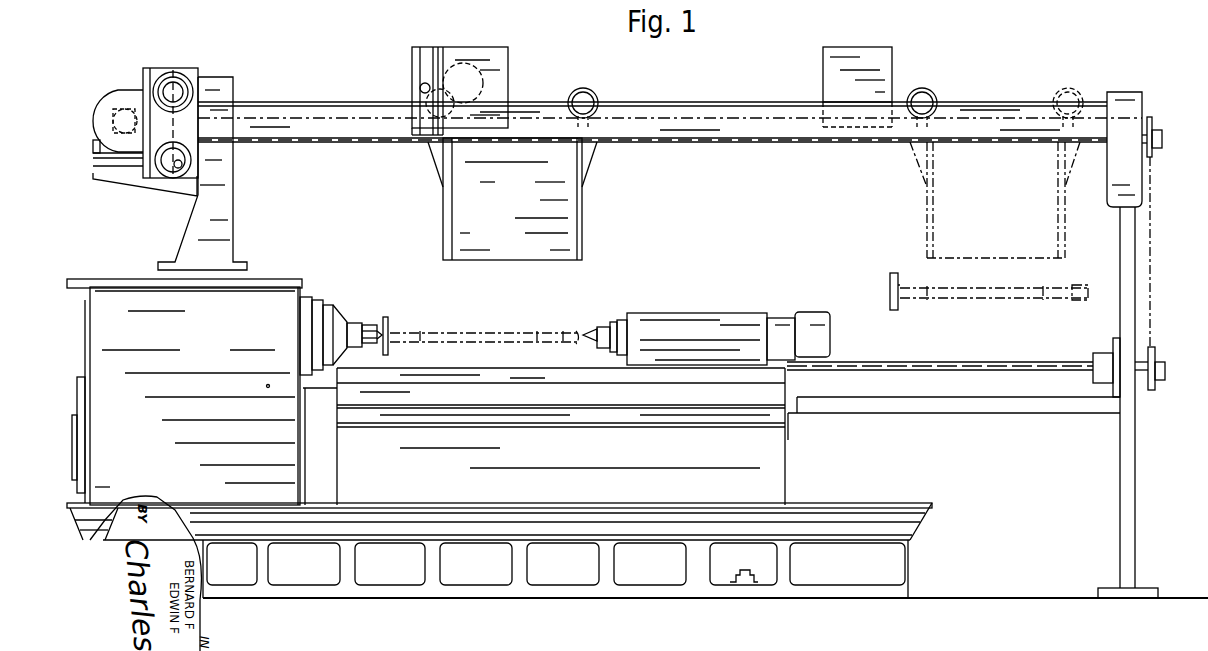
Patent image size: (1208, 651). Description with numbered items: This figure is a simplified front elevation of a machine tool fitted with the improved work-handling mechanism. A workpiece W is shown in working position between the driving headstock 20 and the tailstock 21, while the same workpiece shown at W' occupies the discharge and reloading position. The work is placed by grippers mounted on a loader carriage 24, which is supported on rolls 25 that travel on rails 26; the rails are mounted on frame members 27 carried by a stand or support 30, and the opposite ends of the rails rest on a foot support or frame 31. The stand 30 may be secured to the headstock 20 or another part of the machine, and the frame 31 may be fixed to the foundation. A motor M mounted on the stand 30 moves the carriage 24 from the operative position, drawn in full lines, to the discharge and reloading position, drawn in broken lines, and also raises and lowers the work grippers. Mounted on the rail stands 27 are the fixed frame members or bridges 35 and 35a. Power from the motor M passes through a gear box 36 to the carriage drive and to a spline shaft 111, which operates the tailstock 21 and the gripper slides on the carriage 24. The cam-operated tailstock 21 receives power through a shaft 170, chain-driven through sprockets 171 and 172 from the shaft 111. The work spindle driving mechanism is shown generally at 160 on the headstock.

The driving headstock 20 is at (206, 362).
The tailstock 21 is at (668, 318).
The loader carriage 24 is at (518, 199).
The rolls 25 is at (413, 117).
The rails 26 is at (307, 120).
The frame members 27 is at (326, 139).
The stand 30 is at (191, 221).
The foot support 31 is at (1121, 262).
The fixed frame member 35 is at (500, 48).
The fixed frame member 35a is at (870, 48).
The gear box 36 is at (152, 70).
The spline shaft 111 is at (1161, 133).
The work spindle driving mechanism 160 is at (338, 308).
The shaft 170 is at (977, 352).
The sprocket 171 is at (1154, 155).
The sprocket 172 is at (1156, 347).
The motor M is at (105, 108).
The workpiece W is at (484, 322).
The workpiece in discharge and reloading position W' is at (989, 287).